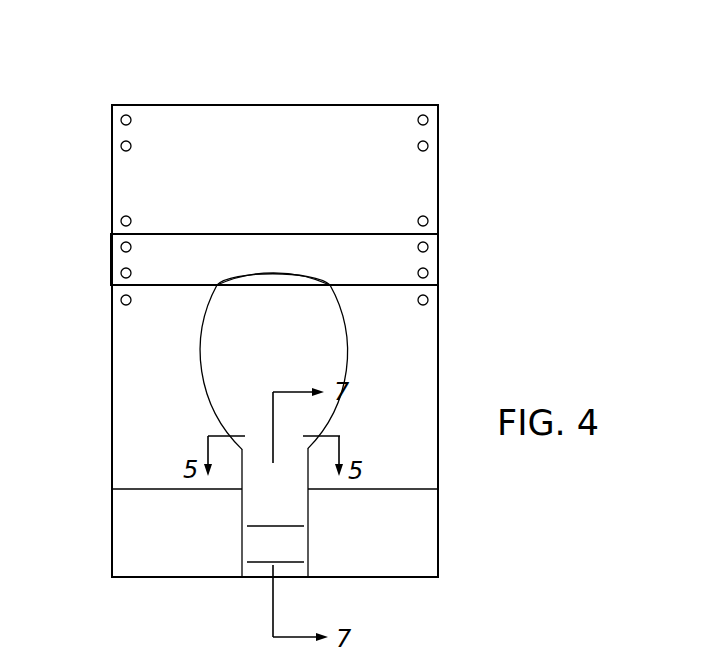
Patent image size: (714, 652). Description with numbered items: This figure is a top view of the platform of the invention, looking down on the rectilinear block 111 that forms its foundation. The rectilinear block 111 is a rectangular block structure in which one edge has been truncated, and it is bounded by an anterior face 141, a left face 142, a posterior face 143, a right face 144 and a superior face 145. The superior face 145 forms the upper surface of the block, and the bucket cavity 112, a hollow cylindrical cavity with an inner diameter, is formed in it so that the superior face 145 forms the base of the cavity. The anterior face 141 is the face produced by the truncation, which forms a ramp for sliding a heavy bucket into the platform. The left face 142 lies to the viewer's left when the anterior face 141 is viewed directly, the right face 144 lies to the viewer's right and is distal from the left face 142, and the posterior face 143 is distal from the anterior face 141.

The rectilinear block 111 is at (178, 97).
The bucket cavity 112 is at (387, 328).
The anterior face 141 is at (415, 523).
The left face 142 is at (110, 372).
The posterior face 143 is at (250, 106).
The right face 144 is at (440, 350).
The superior face 145 is at (353, 118).